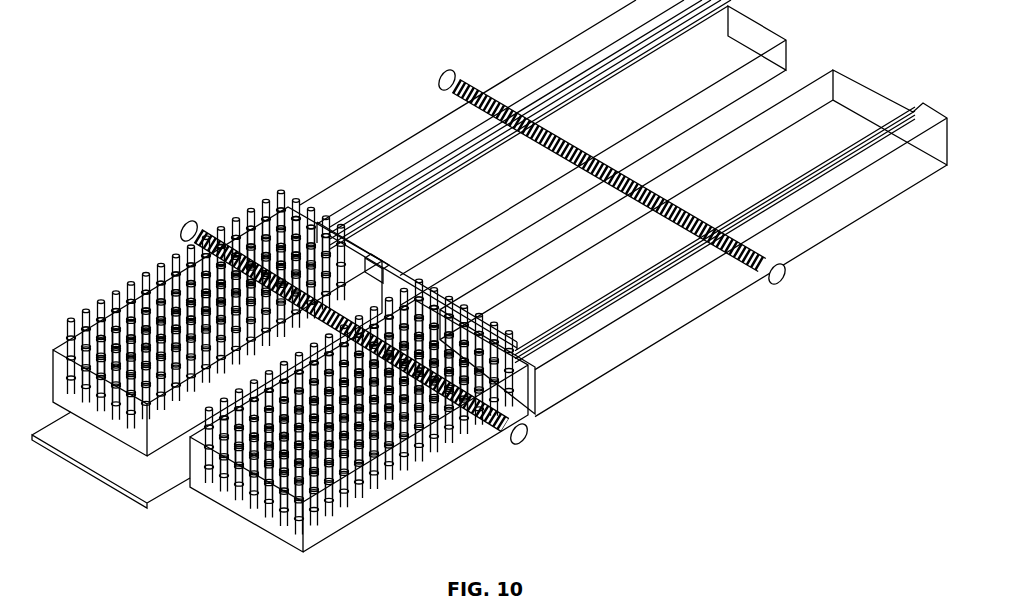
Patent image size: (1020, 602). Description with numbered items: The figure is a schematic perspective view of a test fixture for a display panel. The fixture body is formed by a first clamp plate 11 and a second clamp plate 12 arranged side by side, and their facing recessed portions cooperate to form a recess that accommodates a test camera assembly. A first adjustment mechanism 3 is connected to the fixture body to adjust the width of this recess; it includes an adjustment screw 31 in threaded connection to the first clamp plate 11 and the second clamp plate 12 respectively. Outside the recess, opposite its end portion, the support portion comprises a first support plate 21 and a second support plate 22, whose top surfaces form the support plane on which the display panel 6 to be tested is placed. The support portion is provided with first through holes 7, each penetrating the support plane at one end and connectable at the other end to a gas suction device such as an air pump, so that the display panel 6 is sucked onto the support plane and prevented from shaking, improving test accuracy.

The first adjustment mechanism 3 is at (448, 68).
The adjustment screw 31 is at (182, 223).
The first clamp plate 11 is at (773, 68).
The second clamp plate 12 is at (822, 97).
The first support plate 21 is at (123, 315).
The second support plate 22 is at (402, 483).
The display panel 6 is at (152, 493).
The first through hole 7 is at (160, 297).